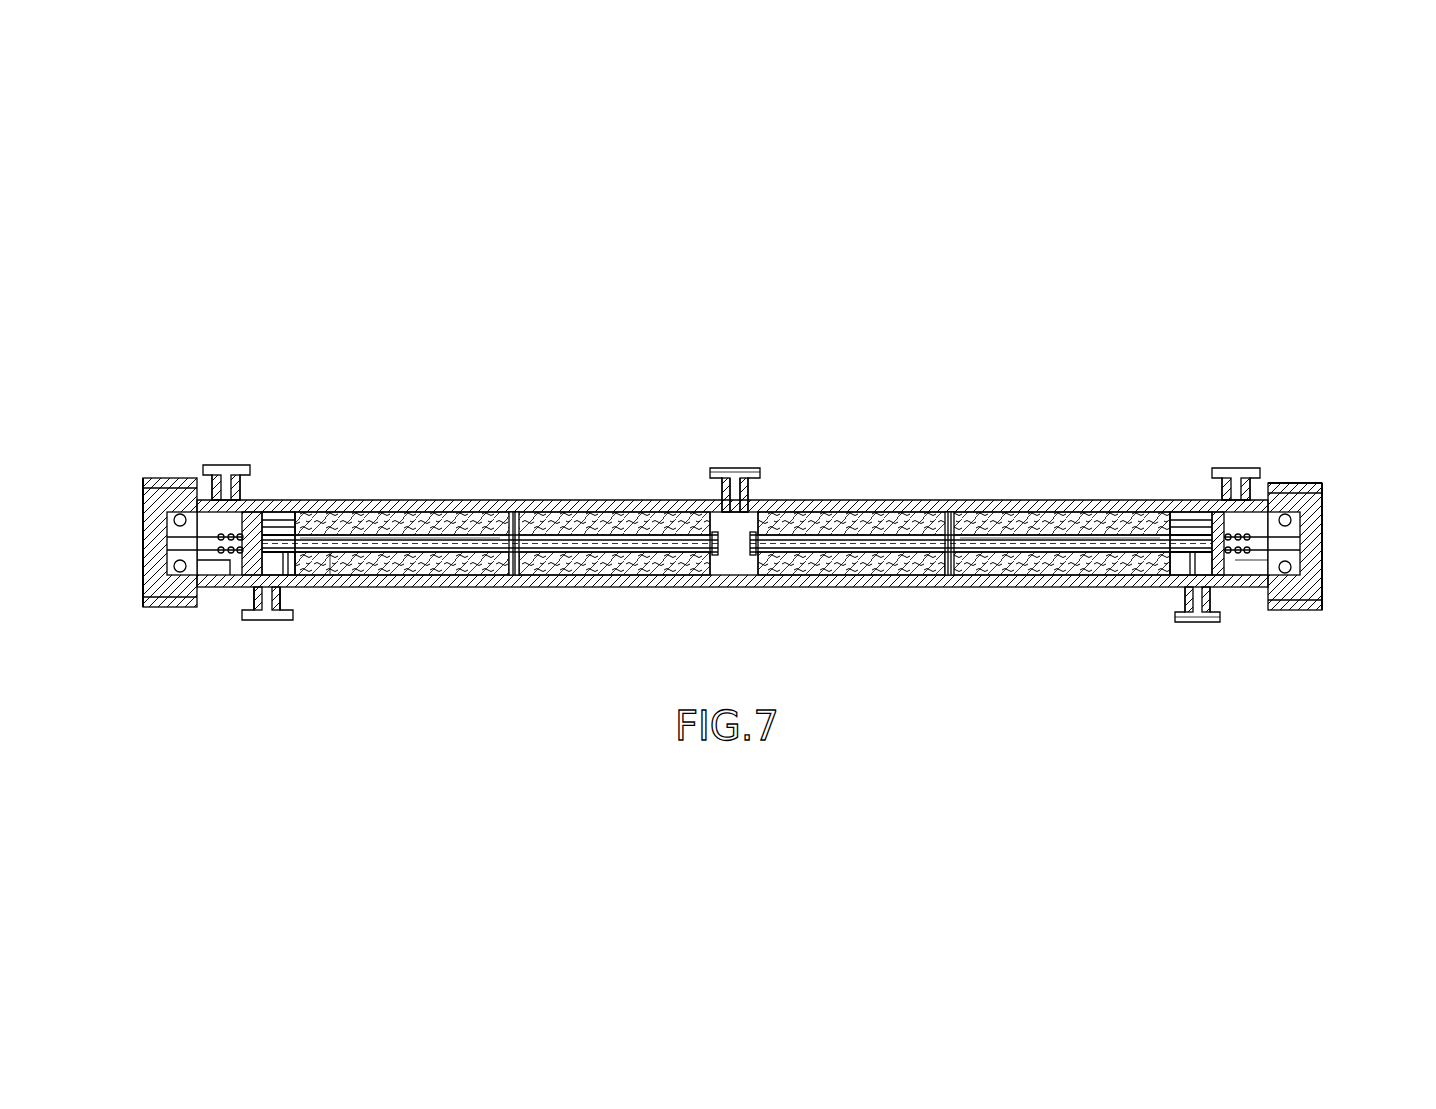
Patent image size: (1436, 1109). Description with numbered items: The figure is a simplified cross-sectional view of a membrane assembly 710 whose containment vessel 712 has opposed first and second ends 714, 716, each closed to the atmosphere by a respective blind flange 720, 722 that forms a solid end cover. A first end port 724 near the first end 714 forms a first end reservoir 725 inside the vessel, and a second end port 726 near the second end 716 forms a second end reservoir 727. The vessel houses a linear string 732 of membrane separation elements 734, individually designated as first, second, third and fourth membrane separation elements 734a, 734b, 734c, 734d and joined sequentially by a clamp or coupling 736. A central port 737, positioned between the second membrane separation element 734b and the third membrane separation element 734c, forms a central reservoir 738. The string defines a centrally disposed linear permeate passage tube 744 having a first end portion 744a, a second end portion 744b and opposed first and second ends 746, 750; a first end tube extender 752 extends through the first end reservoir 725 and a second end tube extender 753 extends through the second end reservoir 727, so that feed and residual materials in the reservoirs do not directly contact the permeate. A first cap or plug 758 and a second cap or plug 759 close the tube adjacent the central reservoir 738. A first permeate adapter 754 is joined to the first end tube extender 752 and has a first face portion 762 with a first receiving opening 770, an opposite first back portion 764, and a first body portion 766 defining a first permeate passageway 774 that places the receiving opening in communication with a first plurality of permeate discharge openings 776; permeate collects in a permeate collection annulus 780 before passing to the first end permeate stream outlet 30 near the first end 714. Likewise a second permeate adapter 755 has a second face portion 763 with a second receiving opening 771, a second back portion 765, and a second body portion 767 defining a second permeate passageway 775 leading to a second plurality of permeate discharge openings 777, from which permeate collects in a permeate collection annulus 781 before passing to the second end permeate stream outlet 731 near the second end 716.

The membrane assembly 710 is at (963, 388).
The containment vessel 712 is at (588, 498).
The first end 714 is at (143, 650).
The second end 716 is at (1279, 658).
The blind flange 720 is at (155, 478).
The blind flange 722 is at (1322, 577).
The first end port 724 is at (280, 612).
The first end reservoir 725 is at (328, 506).
The second end port 726 is at (1175, 620).
The second end reservoir 727 is at (1180, 505).
The first end permeate stream outlet 30 is at (232, 530).
The second end permeate stream outlet 731 is at (1232, 524).
The string of membrane separation elements 732 is at (856, 508).
The membrane separation elements 734 is at (462, 512).
The first membrane separation element 734a is at (378, 587).
The second membrane separation element 734b is at (607, 587).
The third membrane separation element 734c is at (840, 587).
The fourth membrane separation element 734d is at (1052, 587).
The clamp 736 is at (493, 587).
The central port 737 is at (712, 492).
The central reservoir 738 is at (740, 587).
The linear permeate passage tube 744 is at (592, 500).
The first end portion 744a is at (410, 520).
The second end portion 744b is at (1040, 500).
The first end 746 is at (298, 520).
The second end 750 is at (1150, 578).
The first end tube extender 752 is at (320, 587).
The second end tube extender 753 is at (1198, 520).
The first permeate adapter 754 is at (186, 500).
The second permeate adapter 755 is at (1280, 490).
The first cap or plug 758 is at (705, 587).
The second cap or plug 759 is at (760, 500).
The first face portion 762 is at (232, 587).
The second face portion 763 is at (1210, 622).
The first back portion 764 is at (160, 555).
The second back portion 765 is at (1325, 540).
The first body portion 766 is at (166, 520).
The second body portion 767 is at (1285, 505).
The first receiving opening 770 is at (284, 522).
The second receiving opening 771 is at (1185, 520).
The first permeate passageway 774 is at (178, 590).
The second permeate passageway 775 is at (1238, 590).
The first plurality of permeate discharge openings 776 is at (266, 530).
The second plurality of permeate discharge openings 777 is at (1241, 540).
The permeate collection annulus 780 is at (263, 540).
The permeate collection annulus 781 is at (1226, 500).